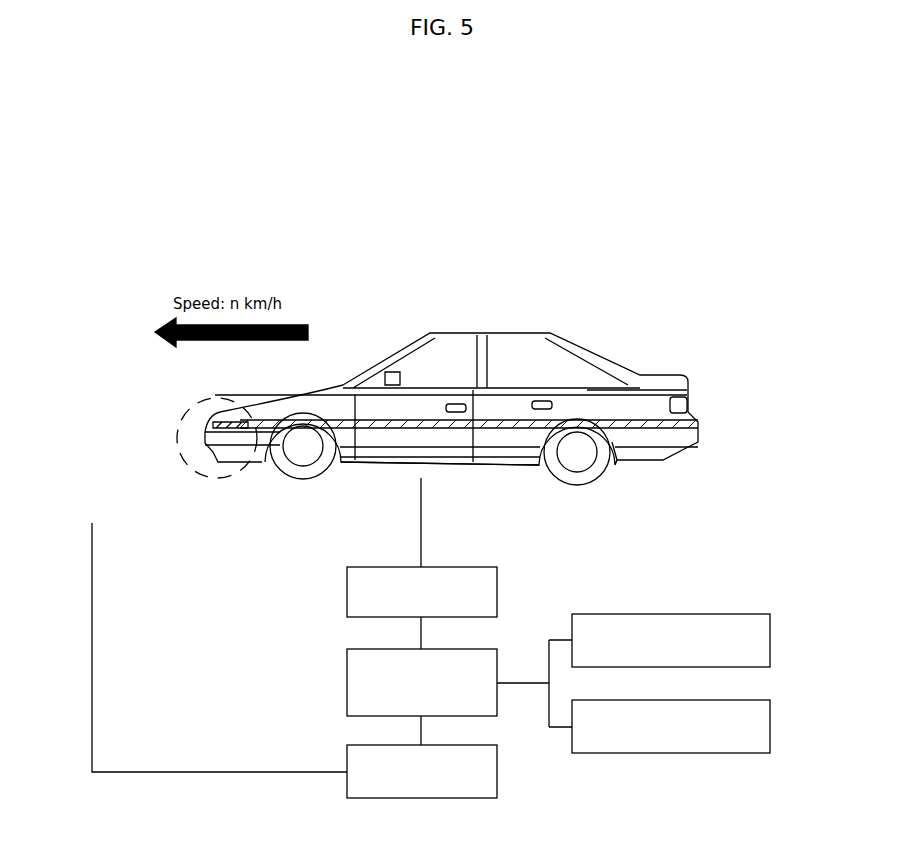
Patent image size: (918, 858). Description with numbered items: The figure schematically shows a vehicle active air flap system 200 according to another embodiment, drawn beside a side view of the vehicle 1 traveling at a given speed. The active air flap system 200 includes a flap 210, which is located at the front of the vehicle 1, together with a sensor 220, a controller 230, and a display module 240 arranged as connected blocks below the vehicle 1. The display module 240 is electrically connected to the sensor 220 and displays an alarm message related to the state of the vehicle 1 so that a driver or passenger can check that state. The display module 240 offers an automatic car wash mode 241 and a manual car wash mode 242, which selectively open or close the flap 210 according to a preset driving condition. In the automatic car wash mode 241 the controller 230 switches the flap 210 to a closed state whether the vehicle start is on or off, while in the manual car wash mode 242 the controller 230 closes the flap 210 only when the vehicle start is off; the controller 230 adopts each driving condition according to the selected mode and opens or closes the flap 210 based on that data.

The vehicle 1 is at (628, 342).
The active air flap system 200 is at (460, 170).
The flap 210 is at (194, 437).
The sensor 220 is at (497, 592).
The controller 230 is at (347, 784).
The display module 240 is at (347, 672).
The automatic car wash mode 241 is at (770, 635).
The manual car wash mode 242 is at (770, 722).